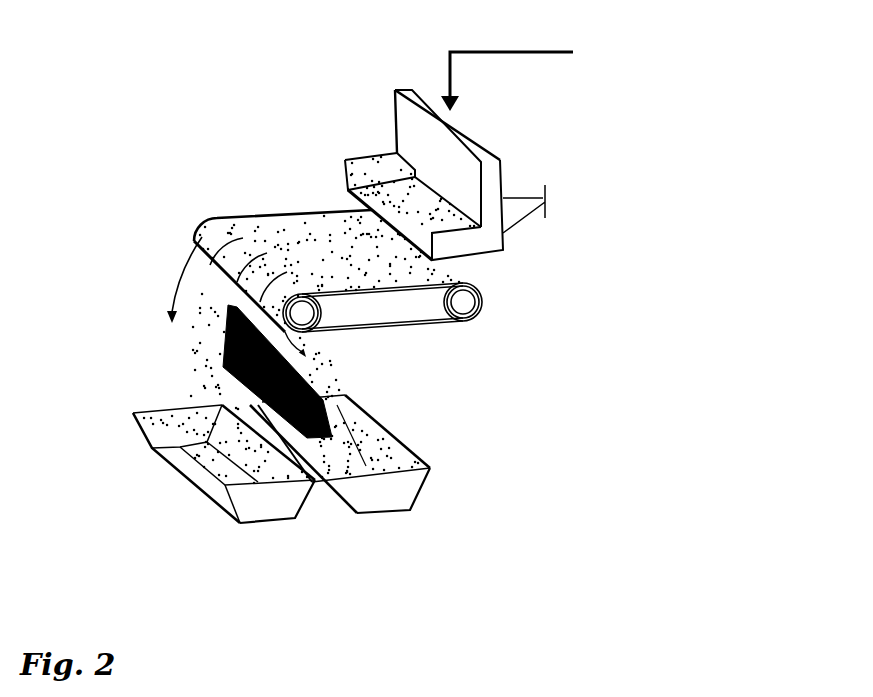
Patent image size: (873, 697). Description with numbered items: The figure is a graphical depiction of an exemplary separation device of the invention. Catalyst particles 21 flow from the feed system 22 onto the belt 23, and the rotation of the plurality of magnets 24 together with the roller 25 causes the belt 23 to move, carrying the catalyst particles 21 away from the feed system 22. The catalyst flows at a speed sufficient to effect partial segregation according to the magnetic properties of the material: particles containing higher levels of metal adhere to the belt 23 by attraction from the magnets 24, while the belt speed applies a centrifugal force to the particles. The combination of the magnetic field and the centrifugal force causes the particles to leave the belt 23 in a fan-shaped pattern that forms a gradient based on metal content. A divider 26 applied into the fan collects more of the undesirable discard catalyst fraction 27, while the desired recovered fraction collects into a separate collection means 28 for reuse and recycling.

The catalyst particles 21 is at (331, 195).
The feed system 22 is at (785, 30).
The belt 23 is at (283, 228).
The plurality of magnets 24 is at (317, 321).
The roller 25 is at (494, 303).
The divider 26 is at (212, 365).
The discard catalyst fraction 27 is at (555, 555).
The collection means 28 is at (272, 527).